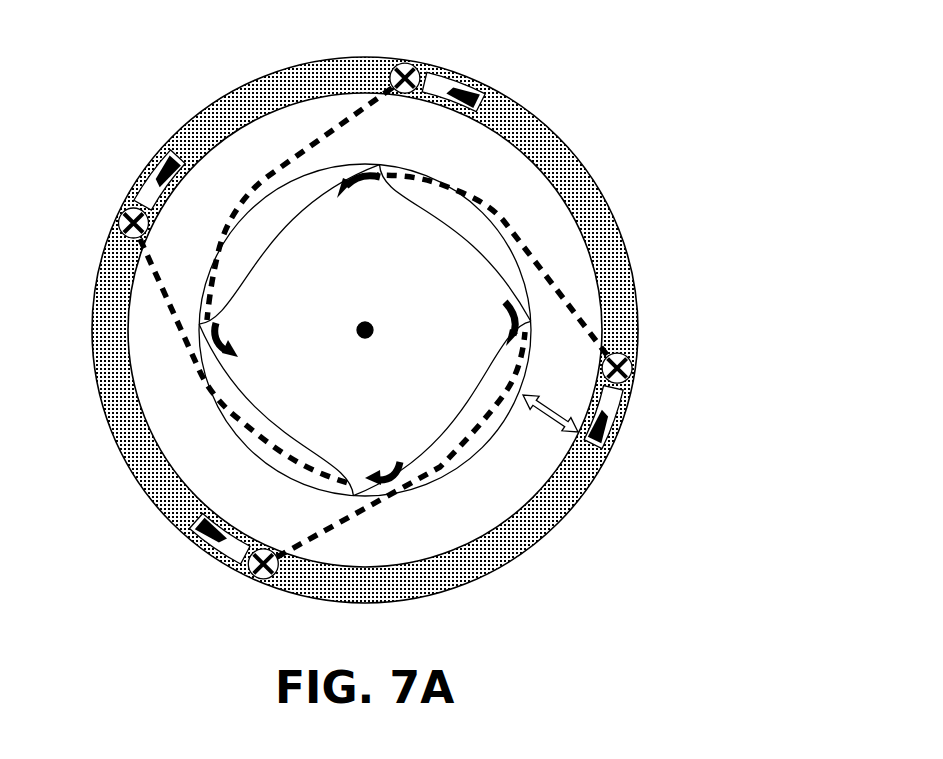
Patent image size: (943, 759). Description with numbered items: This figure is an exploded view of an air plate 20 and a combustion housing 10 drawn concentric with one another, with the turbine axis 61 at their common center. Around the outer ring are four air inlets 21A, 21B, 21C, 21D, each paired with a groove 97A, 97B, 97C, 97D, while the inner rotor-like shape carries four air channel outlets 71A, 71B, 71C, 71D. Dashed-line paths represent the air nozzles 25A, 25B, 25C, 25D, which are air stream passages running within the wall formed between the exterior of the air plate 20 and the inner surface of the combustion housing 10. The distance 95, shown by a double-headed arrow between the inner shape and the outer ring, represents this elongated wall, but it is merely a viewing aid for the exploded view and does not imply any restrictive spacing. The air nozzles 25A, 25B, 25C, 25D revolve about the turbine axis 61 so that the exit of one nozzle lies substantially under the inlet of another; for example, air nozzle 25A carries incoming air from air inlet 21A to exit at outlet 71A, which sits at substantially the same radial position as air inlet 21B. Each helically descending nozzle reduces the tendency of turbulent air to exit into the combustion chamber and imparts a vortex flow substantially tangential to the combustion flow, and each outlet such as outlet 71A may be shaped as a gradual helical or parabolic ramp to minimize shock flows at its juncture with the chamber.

The combustion housing 10 is at (237, 451).
The air plate 20 is at (188, 115).
The air inlet 21A is at (115, 212).
The air inlet 21B is at (250, 584).
The air inlet 21C is at (626, 346).
The air inlet 21D is at (410, 61).
The air nozzle 25A is at (246, 361).
The air nozzle 25B is at (401, 444).
The air nozzle 25C is at (492, 265).
The air nozzle 25D is at (299, 204).
The turbine axis 61 is at (371, 345).
The air channel outlet 71A is at (352, 465).
The air channel outlet 71B is at (503, 341).
The air channel outlet 71C is at (380, 200).
The air channel outlet 71D is at (235, 314).
The distance 95 is at (540, 433).
The groove 97A is at (146, 178).
The groove 97B is at (203, 551).
The groove 97C is at (621, 423).
The groove 97D is at (462, 79).